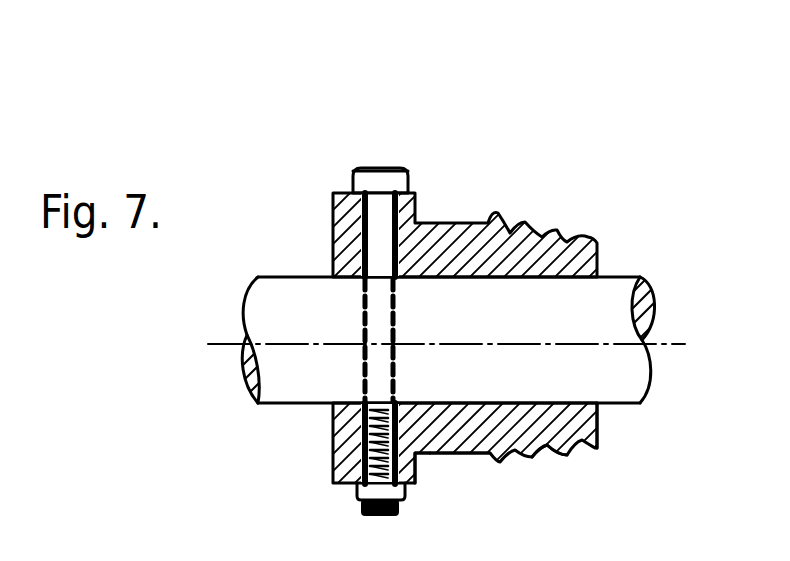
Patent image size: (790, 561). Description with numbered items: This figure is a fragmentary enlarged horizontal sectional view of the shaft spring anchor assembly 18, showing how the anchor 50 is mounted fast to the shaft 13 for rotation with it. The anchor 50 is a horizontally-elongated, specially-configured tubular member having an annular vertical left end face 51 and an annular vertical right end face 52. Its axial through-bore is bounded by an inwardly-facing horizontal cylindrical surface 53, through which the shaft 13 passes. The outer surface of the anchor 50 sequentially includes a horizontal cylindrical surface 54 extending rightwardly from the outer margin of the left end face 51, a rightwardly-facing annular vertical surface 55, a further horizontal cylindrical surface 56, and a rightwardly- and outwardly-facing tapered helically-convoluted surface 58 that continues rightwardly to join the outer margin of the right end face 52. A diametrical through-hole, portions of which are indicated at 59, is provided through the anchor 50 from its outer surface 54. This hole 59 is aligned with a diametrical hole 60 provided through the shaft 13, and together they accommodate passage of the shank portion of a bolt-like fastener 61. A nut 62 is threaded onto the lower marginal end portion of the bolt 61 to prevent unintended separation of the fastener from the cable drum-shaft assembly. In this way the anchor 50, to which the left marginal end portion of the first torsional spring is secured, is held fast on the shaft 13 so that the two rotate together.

The coupling assembly 18 is at (322, 135).
The shaft 13 is at (672, 284).
The anchor 50 is at (570, 218).
The left end face 51 is at (333, 448).
The right end face 52 is at (600, 425).
The inwardly-facing horizontal cylindrical surface 53 is at (475, 280).
The horizontal cylindrical surface 54 is at (357, 491).
The rightwardly-facing annular vertical surface 55 is at (418, 456).
The horizontal cylindrical surface 56 is at (450, 456).
The tapered helically-convoluted surface 58 is at (548, 452).
The diametrical through-hole 59 is at (360, 239).
The diametrical hole 60 is at (368, 304).
The bolt-like fastener 61 is at (386, 166).
The nut 62 is at (360, 502).